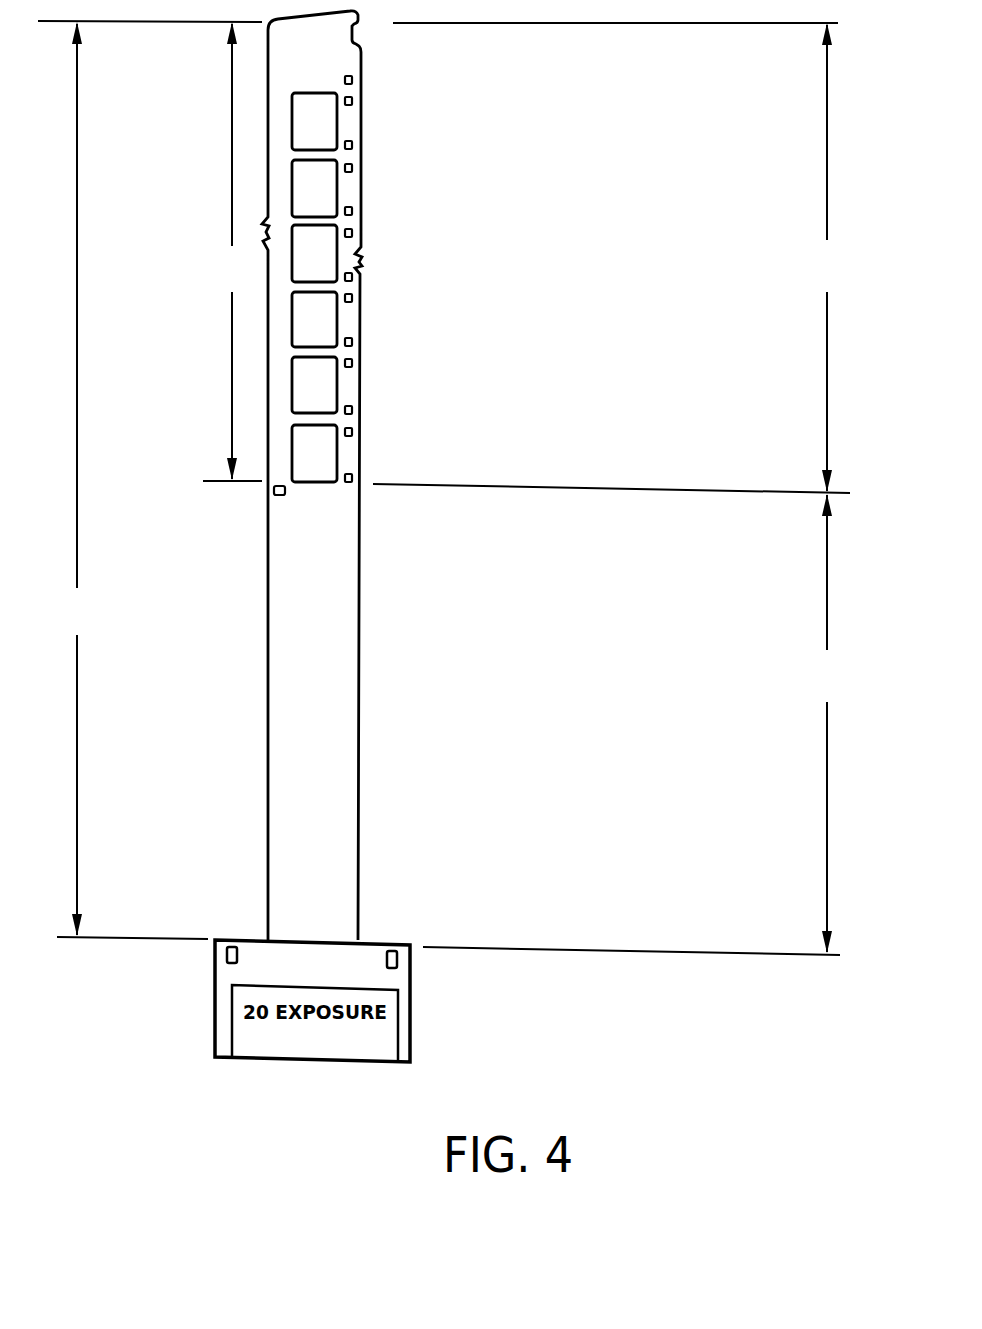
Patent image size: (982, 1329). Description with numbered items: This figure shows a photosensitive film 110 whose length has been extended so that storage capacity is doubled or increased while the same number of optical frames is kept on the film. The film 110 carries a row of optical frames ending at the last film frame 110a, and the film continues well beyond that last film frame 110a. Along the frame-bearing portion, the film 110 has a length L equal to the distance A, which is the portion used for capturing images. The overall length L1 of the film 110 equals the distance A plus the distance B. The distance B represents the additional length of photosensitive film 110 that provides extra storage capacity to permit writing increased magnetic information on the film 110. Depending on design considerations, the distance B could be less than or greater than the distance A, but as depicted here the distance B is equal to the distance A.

The photosensitive film 110 is at (321, 475).
The last film frame 110a is at (319, 493).
The length L is at (230, 251).
The length L1 is at (74, 479).
The distance A is at (826, 257).
The distance B is at (824, 723).